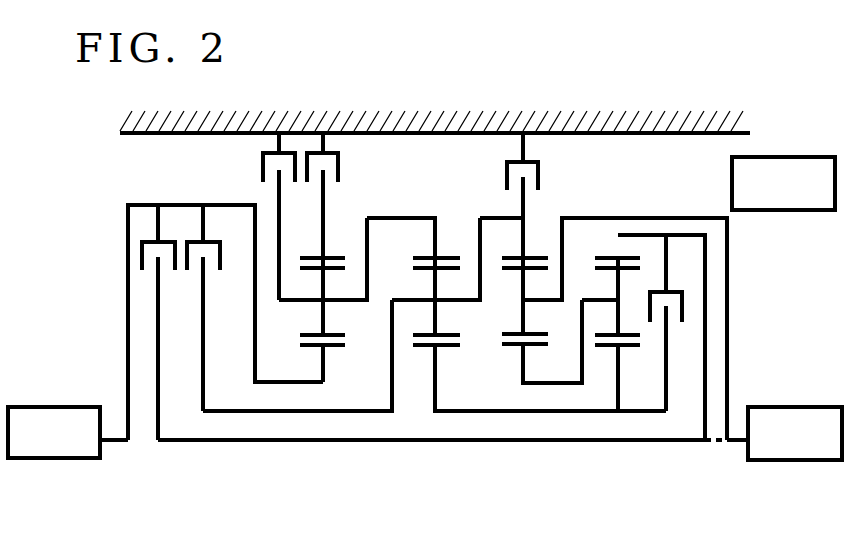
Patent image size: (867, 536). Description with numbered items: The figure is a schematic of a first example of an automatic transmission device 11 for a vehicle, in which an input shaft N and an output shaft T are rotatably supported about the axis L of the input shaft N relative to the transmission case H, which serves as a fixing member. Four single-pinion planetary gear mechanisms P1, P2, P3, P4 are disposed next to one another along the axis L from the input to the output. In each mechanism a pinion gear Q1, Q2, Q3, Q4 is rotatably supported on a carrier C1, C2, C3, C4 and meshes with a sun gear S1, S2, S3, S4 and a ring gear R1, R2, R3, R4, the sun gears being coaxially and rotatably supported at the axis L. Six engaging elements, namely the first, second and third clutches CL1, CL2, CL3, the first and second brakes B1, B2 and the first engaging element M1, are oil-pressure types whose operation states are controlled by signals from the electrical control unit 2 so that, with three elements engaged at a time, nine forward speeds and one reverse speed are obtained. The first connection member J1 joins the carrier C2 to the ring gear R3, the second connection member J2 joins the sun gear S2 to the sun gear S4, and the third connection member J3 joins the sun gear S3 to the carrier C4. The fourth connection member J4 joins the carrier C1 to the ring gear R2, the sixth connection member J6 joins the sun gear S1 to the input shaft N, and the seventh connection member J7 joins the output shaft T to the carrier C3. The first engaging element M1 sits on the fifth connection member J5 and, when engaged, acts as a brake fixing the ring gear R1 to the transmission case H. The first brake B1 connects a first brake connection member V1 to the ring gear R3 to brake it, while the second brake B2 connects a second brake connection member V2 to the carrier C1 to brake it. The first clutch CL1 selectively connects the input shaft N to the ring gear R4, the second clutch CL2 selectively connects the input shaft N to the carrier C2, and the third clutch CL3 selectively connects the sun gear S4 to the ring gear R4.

The electrical control unit 2 is at (805, 157).
The automatic transmission device 11 is at (515, 96).
The transmission case H is at (635, 119).
The input shaft N is at (44, 458).
The output shaft T is at (785, 460).
The axis L is at (714, 441).
The first clutch CL1 is at (138, 253).
The second clutch CL2 is at (184, 238).
The third clutch CL3 is at (688, 310).
The first brake B1 is at (548, 180).
The second brake B2 is at (258, 172).
The first engaging element M1 is at (344, 176).
The first brake connection member V1 is at (525, 216).
The second brake connection member V2 is at (279, 216).
The first connection member J1 is at (492, 216).
The second connection member J2 is at (462, 410).
The third connection member J3 is at (538, 382).
The fourth connection member J4 is at (390, 216).
The fifth connection member J5 is at (324, 209).
The sixth connection member J6 is at (255, 312).
The seventh connection member J7 is at (728, 358).
The first planetary gear mechanism P1 is at (318, 395).
The second planetary gear mechanism P2 is at (425, 420).
The third planetary gear mechanism P3 is at (538, 394).
The fourth planetary gear mechanism P4 is at (641, 398).
The ring gear R1 is at (325, 258).
The ring gear R2 is at (437, 258).
The ring gear R3 is at (525, 258).
The ring gear R4 is at (608, 257).
The first pinion gear Q1 is at (325, 333).
The second pinion gear Q2 is at (437, 333).
The third pinion gear Q3 is at (523, 332).
The fourth pinion gear Q4 is at (616, 333).
The sun gear S1 is at (330, 348).
The sun gear S2 is at (442, 348).
The sun gear S3 is at (522, 347).
The sun gear S4 is at (630, 348).
The carrier C1 is at (300, 301).
The carrier C2 is at (413, 300).
The carrier C3 is at (625, 329).
The carrier C4 is at (612, 300).